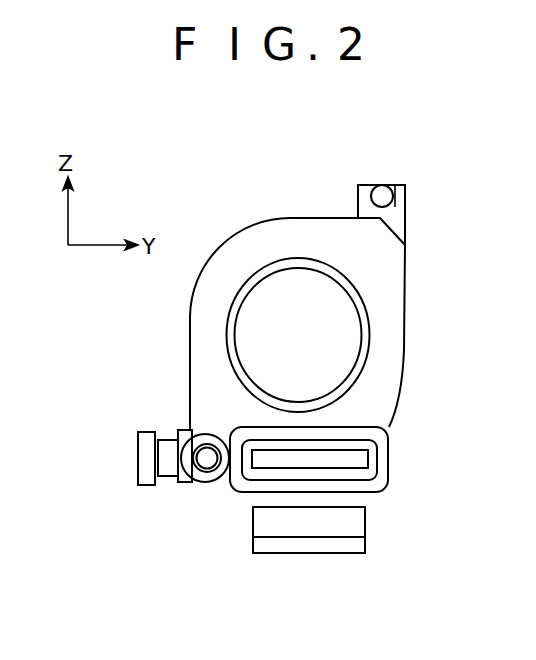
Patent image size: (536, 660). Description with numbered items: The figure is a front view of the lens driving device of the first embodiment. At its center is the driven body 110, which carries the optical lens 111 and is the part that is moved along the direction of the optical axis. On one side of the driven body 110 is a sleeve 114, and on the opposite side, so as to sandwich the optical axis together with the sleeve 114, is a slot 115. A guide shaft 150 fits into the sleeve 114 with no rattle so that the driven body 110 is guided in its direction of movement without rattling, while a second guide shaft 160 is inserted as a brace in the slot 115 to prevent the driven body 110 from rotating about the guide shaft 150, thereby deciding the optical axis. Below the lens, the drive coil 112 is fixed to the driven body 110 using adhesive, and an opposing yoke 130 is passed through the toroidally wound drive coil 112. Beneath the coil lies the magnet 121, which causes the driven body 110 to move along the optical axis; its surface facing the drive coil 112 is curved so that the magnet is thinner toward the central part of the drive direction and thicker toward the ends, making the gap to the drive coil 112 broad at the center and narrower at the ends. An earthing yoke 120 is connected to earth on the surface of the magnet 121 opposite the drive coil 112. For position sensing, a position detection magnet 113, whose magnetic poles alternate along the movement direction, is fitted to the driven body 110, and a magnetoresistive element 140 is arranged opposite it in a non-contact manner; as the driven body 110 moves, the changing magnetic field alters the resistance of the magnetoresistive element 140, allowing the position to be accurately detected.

The driven body 110 is at (293, 243).
The optical lens 111 is at (268, 303).
The drive coil 112 is at (382, 483).
The position detection magnet 113 is at (168, 477).
The sleeve 114 is at (203, 440).
The slot 115 is at (364, 209).
The earthing yoke 120 is at (353, 547).
The magnet 121 is at (277, 538).
The opposing yoke 130 is at (360, 465).
The magnetoresistive element 140 is at (145, 463).
The guide shaft 150 is at (208, 460).
The guide shaft 160 is at (382, 203).